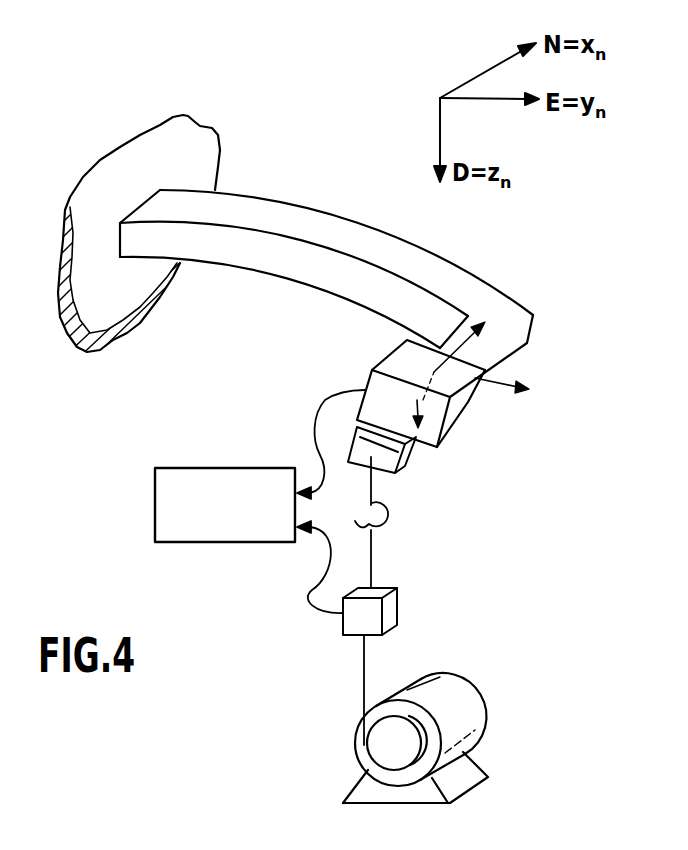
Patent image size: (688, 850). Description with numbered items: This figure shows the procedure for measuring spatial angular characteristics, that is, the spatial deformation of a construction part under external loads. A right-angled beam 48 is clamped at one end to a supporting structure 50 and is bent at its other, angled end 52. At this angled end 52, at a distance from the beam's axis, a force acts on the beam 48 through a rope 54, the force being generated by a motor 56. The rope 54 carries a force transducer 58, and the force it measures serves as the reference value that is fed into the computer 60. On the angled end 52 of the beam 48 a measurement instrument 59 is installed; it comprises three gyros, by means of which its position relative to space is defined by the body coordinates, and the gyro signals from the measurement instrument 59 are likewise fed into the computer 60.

The right-angled beam 48 is at (308, 222).
The mounting structure 50 is at (172, 176).
The angled end of the beam 52 is at (408, 458).
The rope 54 is at (370, 563).
The motor 56 is at (445, 693).
The force transducer 58 is at (348, 620).
The measurement instrument 59 is at (397, 363).
The computer 60 is at (243, 480).